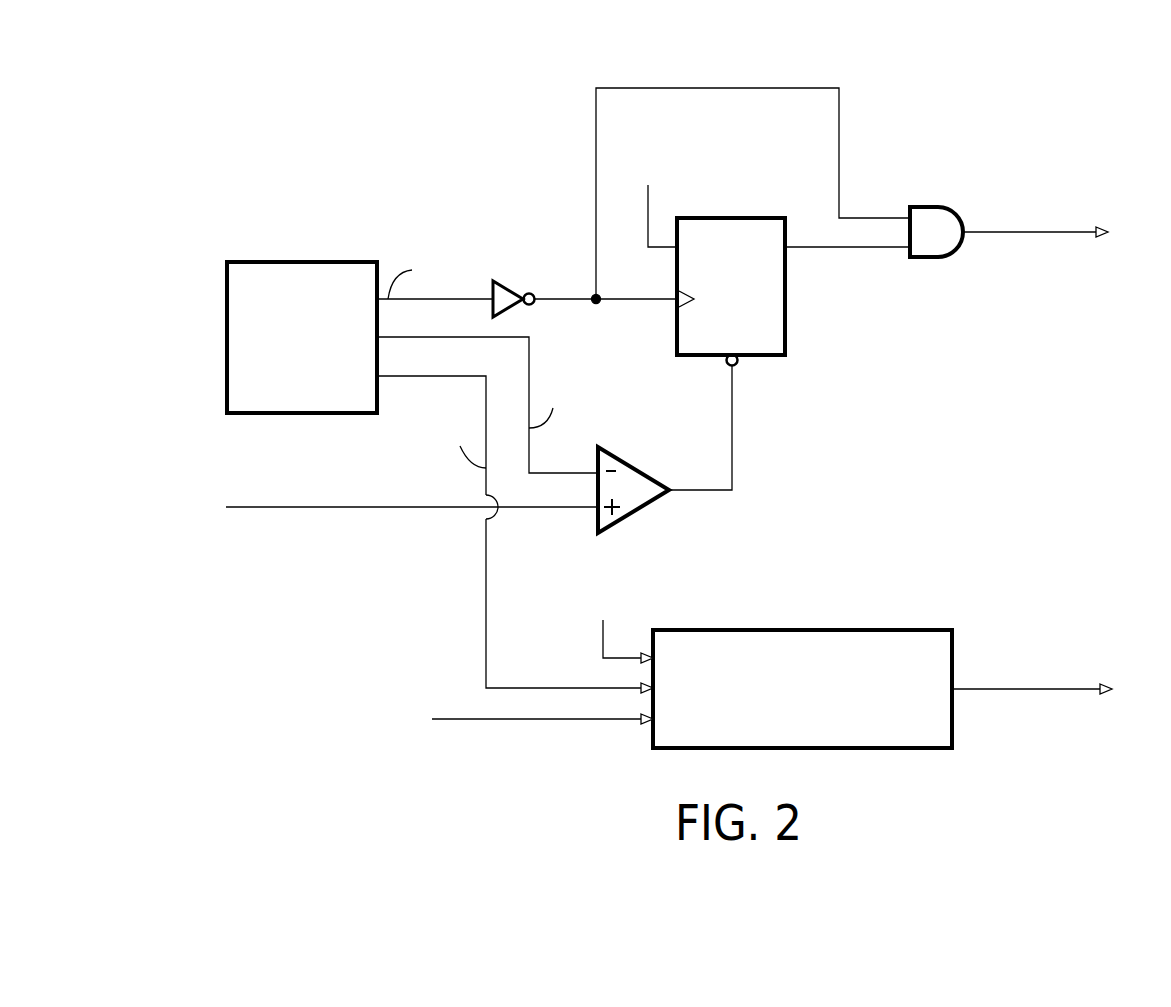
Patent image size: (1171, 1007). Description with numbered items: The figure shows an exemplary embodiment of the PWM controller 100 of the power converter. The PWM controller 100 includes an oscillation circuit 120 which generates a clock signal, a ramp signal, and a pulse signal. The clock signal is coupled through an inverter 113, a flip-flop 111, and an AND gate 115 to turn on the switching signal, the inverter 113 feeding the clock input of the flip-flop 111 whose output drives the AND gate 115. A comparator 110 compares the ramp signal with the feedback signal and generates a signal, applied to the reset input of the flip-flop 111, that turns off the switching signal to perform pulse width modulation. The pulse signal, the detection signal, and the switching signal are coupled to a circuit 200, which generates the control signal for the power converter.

The PWM controller 100 is at (1148, 90).
The oscillation circuit 120 is at (343, 262).
The inverter 113 is at (509, 280).
The flip-flop 111 is at (750, 218).
The AND gate 115 is at (925, 207).
The comparator 110 is at (635, 467).
The circuit 200 is at (828, 705).